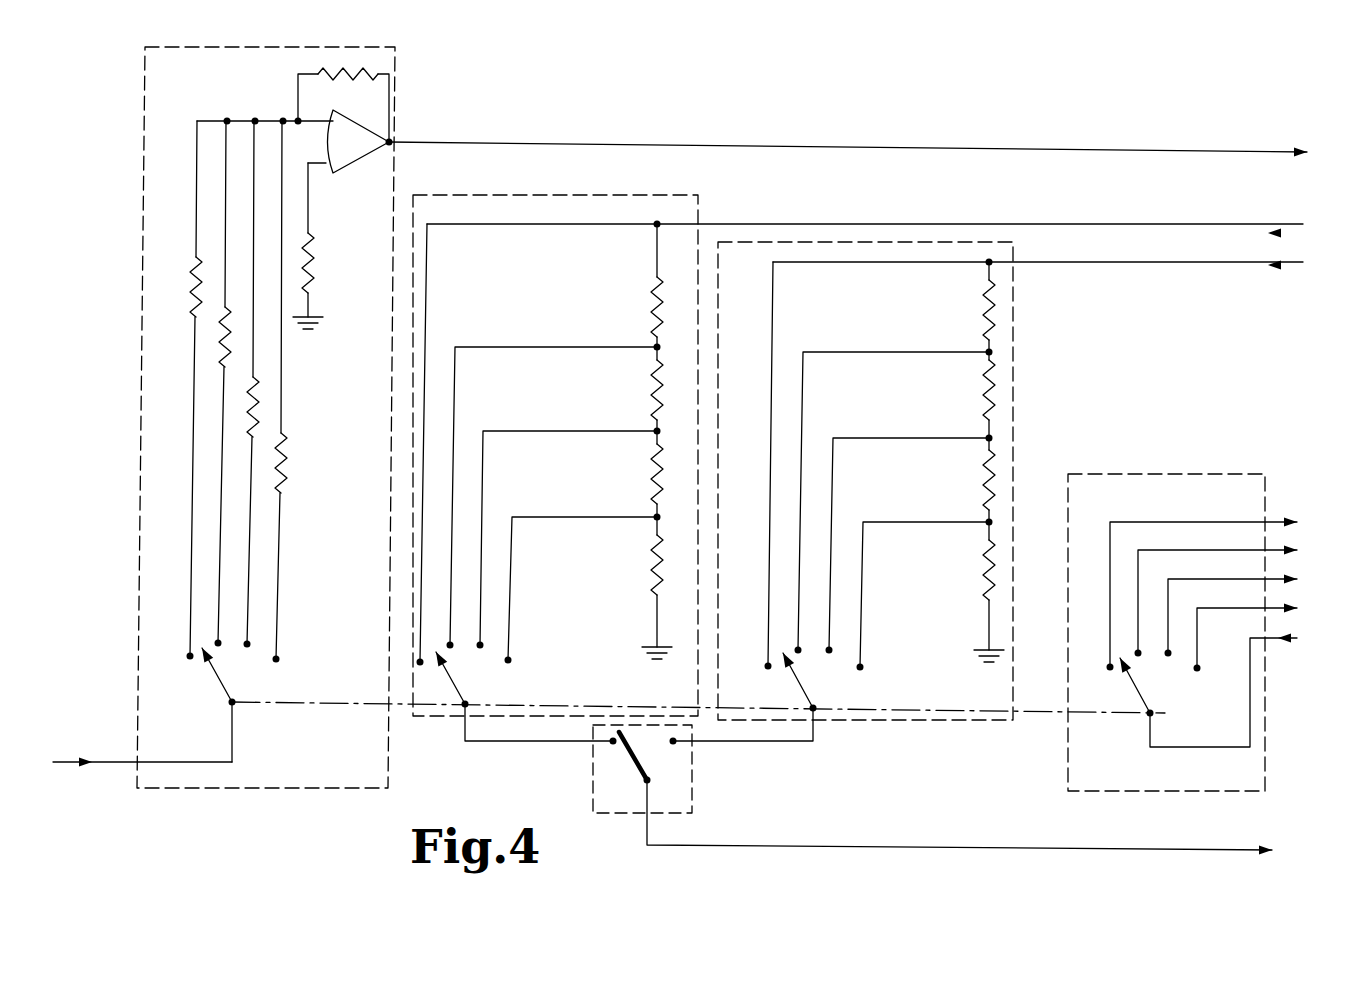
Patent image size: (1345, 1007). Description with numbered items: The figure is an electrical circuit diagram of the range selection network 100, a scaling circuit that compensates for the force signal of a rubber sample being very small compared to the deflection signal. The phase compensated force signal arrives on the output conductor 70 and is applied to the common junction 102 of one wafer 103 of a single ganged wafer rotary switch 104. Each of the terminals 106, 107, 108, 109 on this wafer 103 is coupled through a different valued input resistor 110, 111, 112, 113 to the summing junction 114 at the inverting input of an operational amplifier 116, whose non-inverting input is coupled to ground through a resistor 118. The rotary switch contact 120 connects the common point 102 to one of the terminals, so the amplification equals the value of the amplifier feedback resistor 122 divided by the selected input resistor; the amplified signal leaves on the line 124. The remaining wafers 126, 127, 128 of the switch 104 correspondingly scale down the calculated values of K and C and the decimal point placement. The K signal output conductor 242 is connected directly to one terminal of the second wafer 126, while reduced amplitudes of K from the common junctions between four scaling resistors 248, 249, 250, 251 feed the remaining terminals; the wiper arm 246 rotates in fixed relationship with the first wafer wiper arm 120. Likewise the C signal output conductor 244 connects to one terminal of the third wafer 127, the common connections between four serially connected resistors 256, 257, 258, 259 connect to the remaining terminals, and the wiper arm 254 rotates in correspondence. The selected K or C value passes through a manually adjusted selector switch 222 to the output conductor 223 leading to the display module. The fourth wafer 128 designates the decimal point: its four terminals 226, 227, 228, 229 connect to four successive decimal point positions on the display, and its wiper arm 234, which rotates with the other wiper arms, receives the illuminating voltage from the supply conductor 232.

The output conductor 70 is at (105, 760).
The range selection network 100 is at (186, 790).
The common junction 102 is at (228, 702).
The wafer 103 is at (268, 748).
The single ganged wafer rotary switch 104 is at (1280, 724).
The terminal 106 is at (190, 648).
The terminal 107 is at (216, 636).
The terminal 108 is at (250, 644).
The terminal 109 is at (280, 659).
The input resistor 110 is at (196, 280).
The input resistor 111 is at (226, 330).
The input resistor 112 is at (252, 420).
The input resistor 113 is at (282, 450).
The summing junction 114 is at (270, 118).
The operational amplifier 116 is at (351, 166).
The resistor 118 is at (312, 256).
The rotary switch contact 120 is at (210, 672).
The amplifier feedback resistor 122 is at (324, 72).
The amplifier output line 124 is at (581, 146).
The second wafer 126 is at (510, 686).
The third wafer 127 is at (865, 691).
The fourth wafer 128 is at (1194, 697).
The selector switch 222 is at (628, 757).
The output conductor 223 is at (912, 846).
The terminal 226 is at (1205, 520).
The terminal 227 is at (1222, 549).
The terminal 228 is at (1234, 578).
The terminal 229 is at (1239, 607).
The supply conductor 232 is at (1283, 641).
The wiper arm 234 is at (1130, 690).
The K signal output conductor 242 is at (1118, 230).
The C signal output conductor 244 is at (1130, 266).
The wiper arm 246 is at (450, 686).
The scaling resistor 248 is at (652, 282).
The scaling resistor 249 is at (653, 393).
The scaling resistor 250 is at (652, 486).
The scaling resistor 251 is at (653, 557).
The wiper arm 254 is at (796, 680).
The resistor 256 is at (984, 318).
The resistor 257 is at (985, 396).
The resistor 258 is at (984, 478).
The resistor 259 is at (984, 570).